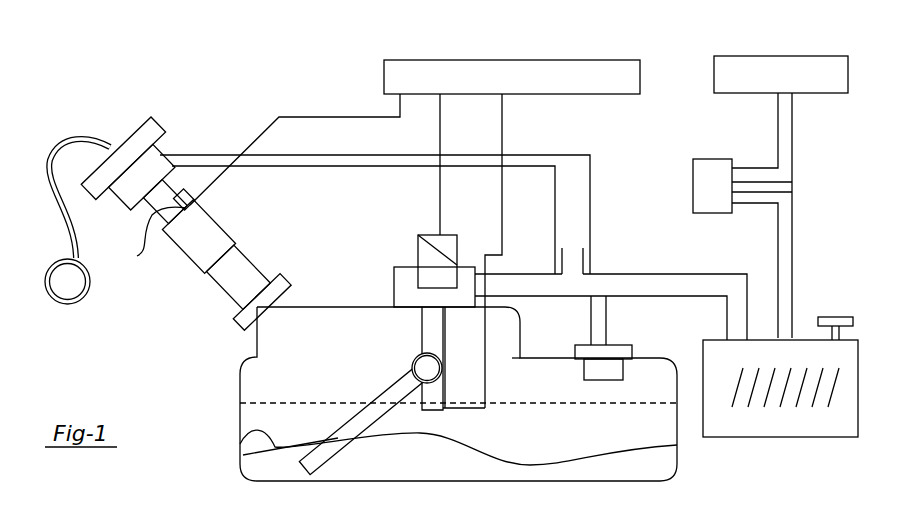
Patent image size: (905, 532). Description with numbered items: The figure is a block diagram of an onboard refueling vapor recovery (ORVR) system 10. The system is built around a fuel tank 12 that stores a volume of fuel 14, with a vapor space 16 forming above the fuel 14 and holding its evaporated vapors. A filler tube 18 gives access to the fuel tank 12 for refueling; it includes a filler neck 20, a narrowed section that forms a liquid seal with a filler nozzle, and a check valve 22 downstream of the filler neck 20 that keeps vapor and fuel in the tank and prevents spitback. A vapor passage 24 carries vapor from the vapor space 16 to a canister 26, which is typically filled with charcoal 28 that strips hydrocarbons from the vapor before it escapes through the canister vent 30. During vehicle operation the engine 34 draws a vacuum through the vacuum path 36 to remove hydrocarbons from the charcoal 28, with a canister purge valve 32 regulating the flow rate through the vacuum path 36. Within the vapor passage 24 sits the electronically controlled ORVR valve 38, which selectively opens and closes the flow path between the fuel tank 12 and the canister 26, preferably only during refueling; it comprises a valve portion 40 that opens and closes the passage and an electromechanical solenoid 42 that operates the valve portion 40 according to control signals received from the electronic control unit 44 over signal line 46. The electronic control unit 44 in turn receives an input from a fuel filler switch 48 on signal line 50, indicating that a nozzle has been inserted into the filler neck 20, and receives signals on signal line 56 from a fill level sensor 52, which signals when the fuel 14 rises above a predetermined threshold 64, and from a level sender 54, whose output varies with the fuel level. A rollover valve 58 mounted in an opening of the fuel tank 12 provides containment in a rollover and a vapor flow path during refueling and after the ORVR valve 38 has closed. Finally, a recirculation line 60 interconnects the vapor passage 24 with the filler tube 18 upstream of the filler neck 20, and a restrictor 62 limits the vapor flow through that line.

The onboard refueling vapor recovery (ORVR) system 10 is at (88, 100).
The fuel tank 12 is at (232, 410).
The fuel 14 is at (240, 440).
The vapor space 16 is at (346, 351).
The filler tube 18 is at (161, 131).
The filler neck 20 is at (180, 248).
The check valve 22 is at (238, 328).
The vapor passage 24 is at (660, 274).
The canister 26 is at (800, 438).
The charcoal 28 is at (728, 407).
The canister vent 30 is at (836, 318).
The canister purge valve 32 is at (697, 178).
The engine 34 is at (737, 64).
The vacuum path 36 is at (793, 128).
The ORVR valve 38 is at (390, 222).
The valve portion 40 is at (398, 283).
The electromechanical solenoid 42 is at (430, 234).
The electronic control unit 44 is at (384, 75).
The signal line 46 is at (441, 136).
The fuel filler switch 48 is at (115, 221).
The signal line 50 is at (279, 117).
The fill level sensor 52 is at (440, 415).
The level sender 54 is at (350, 470).
The signal line 56 is at (503, 130).
The rollover valve 58 is at (572, 347).
The recirculation line 60 is at (301, 168).
The restrictor 62 is at (565, 255).
The predetermined threshold 64 is at (580, 408).